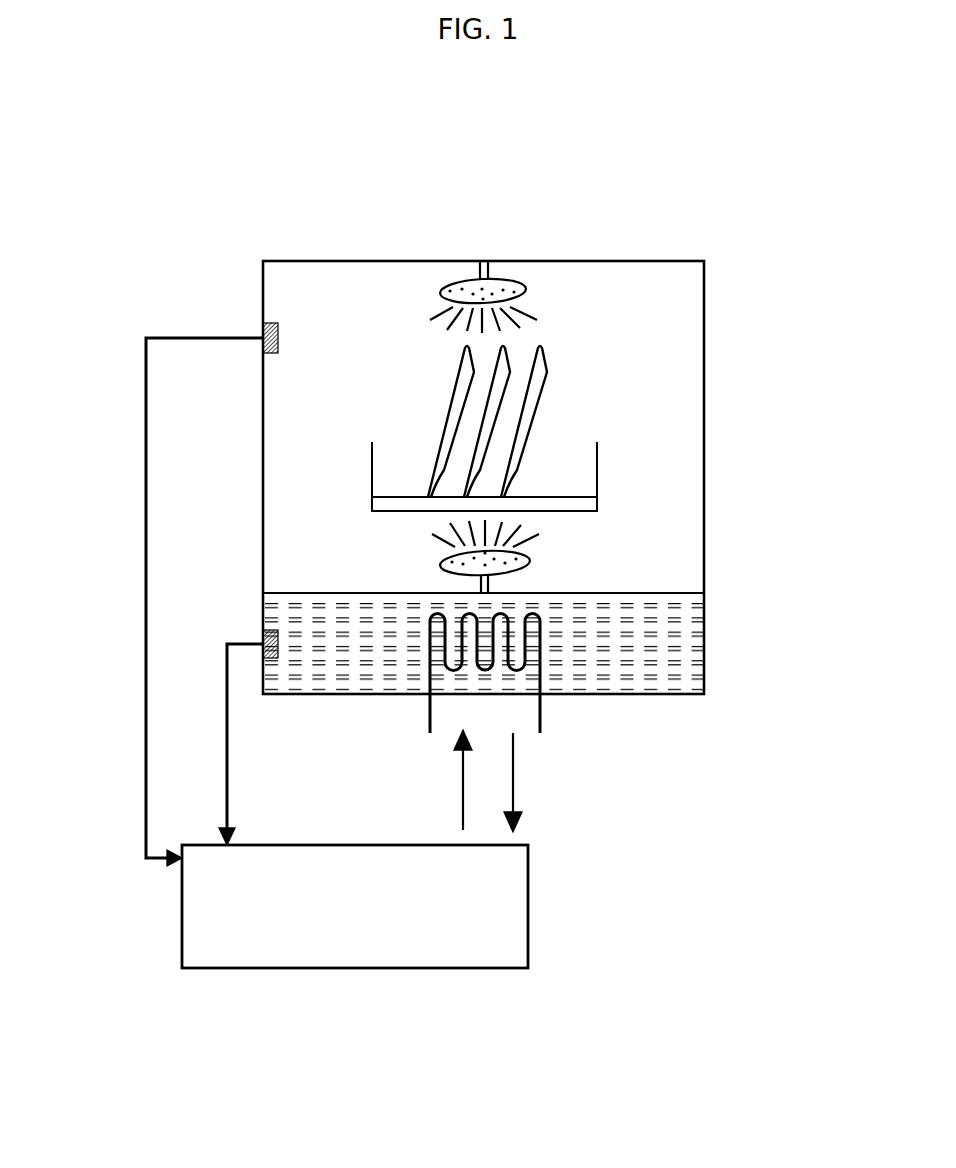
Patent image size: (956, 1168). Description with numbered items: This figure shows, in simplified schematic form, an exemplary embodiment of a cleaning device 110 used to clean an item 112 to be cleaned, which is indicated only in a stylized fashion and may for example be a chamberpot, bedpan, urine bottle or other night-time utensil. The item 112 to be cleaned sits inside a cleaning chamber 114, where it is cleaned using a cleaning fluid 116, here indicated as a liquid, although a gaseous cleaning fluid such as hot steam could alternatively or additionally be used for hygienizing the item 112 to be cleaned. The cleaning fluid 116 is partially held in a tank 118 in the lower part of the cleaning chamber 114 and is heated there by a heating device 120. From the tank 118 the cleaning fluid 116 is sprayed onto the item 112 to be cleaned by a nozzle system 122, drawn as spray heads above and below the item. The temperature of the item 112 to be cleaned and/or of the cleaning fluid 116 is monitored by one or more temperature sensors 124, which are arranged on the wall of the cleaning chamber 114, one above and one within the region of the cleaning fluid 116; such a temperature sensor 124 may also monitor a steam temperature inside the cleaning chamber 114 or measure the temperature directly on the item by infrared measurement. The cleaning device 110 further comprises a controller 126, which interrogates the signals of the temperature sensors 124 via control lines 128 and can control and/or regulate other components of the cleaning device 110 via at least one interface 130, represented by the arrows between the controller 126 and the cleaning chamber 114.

The cleaning device 110 is at (751, 257).
The item to be cleaned 112 is at (538, 374).
The cleaning chamber 114 is at (704, 403).
The cleaning fluid 116 is at (550, 642).
The tank 118 is at (706, 652).
The heating device 120 is at (543, 640).
The nozzle system 122 is at (527, 288).
The temperature sensor 124 is at (278, 327).
The controller 126 is at (334, 925).
The control lines 128 is at (227, 712).
The interface 130 is at (514, 783).